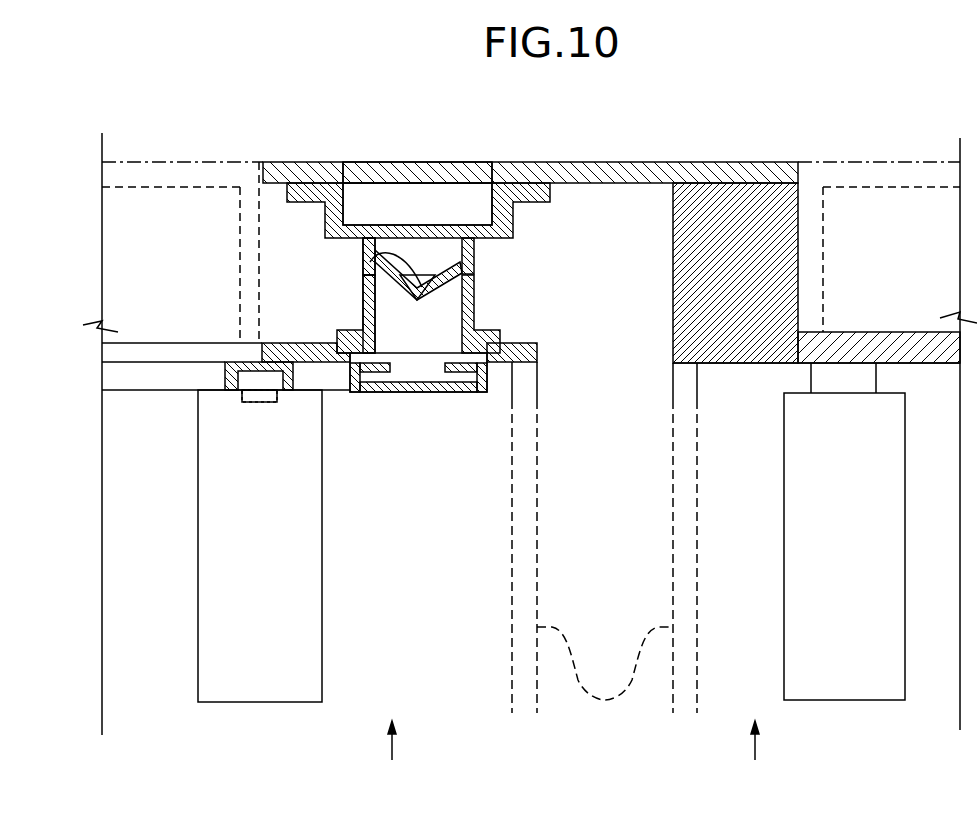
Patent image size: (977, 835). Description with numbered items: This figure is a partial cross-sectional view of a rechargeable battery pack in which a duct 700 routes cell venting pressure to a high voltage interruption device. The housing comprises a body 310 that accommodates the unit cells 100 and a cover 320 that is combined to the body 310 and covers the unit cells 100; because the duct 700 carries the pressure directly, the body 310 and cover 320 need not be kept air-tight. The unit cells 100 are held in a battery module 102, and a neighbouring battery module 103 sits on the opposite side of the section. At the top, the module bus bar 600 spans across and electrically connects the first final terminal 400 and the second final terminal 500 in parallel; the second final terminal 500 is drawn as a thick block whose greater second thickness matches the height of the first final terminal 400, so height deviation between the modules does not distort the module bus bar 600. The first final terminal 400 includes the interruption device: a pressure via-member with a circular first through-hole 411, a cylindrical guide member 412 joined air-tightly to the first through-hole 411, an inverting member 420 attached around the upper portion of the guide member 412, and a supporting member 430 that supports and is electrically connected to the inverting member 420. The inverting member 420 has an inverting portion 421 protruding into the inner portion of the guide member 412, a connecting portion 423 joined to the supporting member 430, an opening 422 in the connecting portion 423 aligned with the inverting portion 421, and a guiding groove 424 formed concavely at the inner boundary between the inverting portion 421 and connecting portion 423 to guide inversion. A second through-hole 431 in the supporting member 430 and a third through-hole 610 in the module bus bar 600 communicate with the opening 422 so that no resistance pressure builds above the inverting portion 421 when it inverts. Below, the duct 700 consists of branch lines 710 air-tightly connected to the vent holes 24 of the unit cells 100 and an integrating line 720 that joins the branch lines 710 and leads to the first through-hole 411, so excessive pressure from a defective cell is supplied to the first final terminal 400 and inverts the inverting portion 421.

The vent hole 24 is at (257, 403).
The unit cell 100 is at (258, 703).
The battery module 102 is at (392, 760).
The battery module 103 is at (755, 760).
The body 310 is at (604, 549).
The cover 320 is at (147, 160).
The first final terminal 400 is at (610, 203).
The first through-hole 411 is at (533, 343).
The guide member 412 is at (480, 301).
The inverting member 420 is at (482, 254).
The inverting portion 421 is at (363, 286).
The opening 422 is at (393, 252).
The connecting portion 423 is at (362, 246).
The guiding groove 424 is at (417, 298).
The supporting member 430 is at (517, 218).
The second through-hole 431 is at (442, 227).
The second final terminal 500 is at (728, 220).
The module bus bar 600 is at (637, 162).
The third through-hole 610 is at (478, 162).
The duct 700 is at (437, 470).
The branch line 710 is at (290, 378).
The integrating line 720 is at (415, 393).